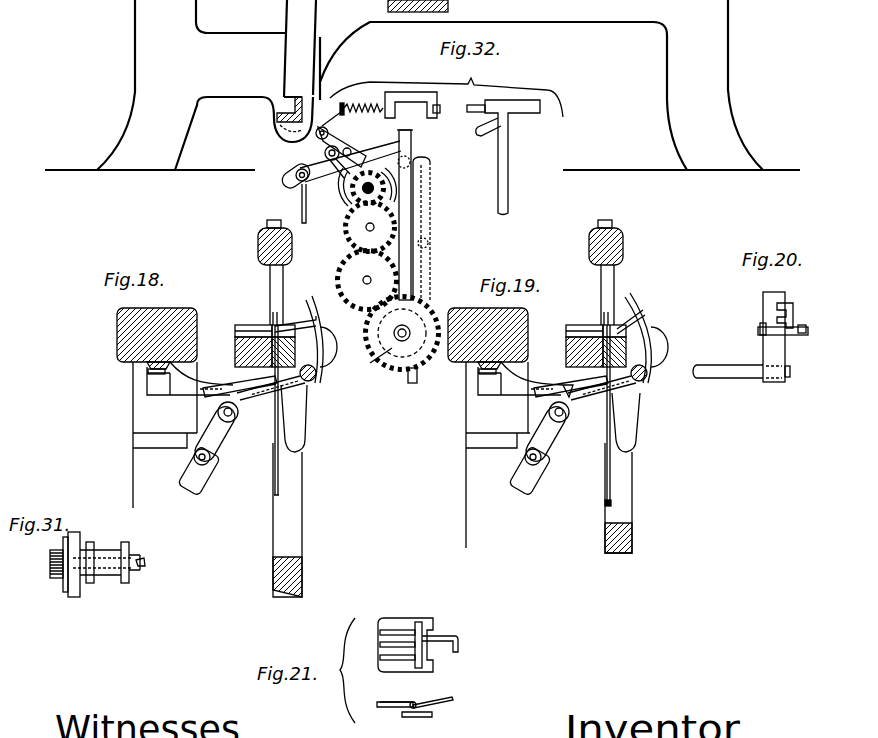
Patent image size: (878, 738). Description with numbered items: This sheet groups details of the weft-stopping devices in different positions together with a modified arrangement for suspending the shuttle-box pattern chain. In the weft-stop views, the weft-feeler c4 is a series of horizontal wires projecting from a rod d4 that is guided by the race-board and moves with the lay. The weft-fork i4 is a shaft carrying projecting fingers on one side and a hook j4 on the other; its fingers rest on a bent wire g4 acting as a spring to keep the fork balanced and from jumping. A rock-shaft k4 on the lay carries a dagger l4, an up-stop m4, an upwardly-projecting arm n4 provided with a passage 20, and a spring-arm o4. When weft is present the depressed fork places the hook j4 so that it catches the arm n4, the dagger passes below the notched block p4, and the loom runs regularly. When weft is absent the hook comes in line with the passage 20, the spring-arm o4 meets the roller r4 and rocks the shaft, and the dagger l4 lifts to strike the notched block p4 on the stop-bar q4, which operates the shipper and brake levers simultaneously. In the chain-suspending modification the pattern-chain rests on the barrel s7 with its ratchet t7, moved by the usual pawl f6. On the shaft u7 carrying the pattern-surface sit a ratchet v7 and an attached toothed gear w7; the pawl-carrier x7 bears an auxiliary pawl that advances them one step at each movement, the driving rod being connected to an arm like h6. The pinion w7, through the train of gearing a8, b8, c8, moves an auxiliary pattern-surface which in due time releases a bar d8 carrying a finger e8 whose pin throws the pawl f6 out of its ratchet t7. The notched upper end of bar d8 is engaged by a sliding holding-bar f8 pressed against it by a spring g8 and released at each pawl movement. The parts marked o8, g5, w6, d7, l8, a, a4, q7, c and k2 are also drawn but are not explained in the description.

In FIG. 32, the spring g8 is at (361, 102).
In FIG. 32, the sliding holding-bar f8 is at (454, 105).
In FIG. 32, the pawl f6 is at (337, 121).
In FIG. 32, the finger e8 is at (349, 145).
In FIG. 32, the bar d8 is at (413, 215).
In FIG. 32, the arm h6 is at (426, 228).
In FIG. 32, the lever o8 is at (350, 161).
In FIG. 32, the pawl-carrier x7 is at (296, 171).
In FIG. 32, the rod g5 is at (302, 191).
In FIG. 32, the toothed gear w7 is at (352, 203).
In FIG. 31, the toothed gear w7 is at (52, 555).
In FIG. 32, the ratchet t7 is at (345, 177).
In FIG. 31, the ratchet t7 is at (75, 598).
In FIG. 32, the ratchet v7 is at (349, 190).
In FIG. 31, the ratchet v7 is at (65, 594).
In FIG. 32, the gear of the train a8 is at (370, 227).
In FIG. 32, the gear of the train b8 is at (367, 280).
In FIG. 32, the gear of the train c8 is at (393, 333).
In FIG. 32, the disk w6 is at (373, 363).
In FIG. 32, the stop d7 is at (408, 378).
In FIG. 32, the T-rod l8 is at (503, 157).
In FIG. 18, the frame a is at (181, 435).
In FIG. 19, the frame a is at (513, 455).
In FIG. 18, the block a4 is at (157, 333).
In FIG. 19, the block a4 is at (488, 333).
In FIG. 18, the stop-bar q4 is at (150, 364).
In FIG. 19, the wedge q7 is at (467, 372).
In FIG. 18, the weft-fork i4 is at (266, 325).
In FIG. 19, the weft-fork i4 is at (599, 272).
In FIG. 21, the weft-fork i4 is at (380, 645).
In FIG. 18, the weft-feeler c4 is at (235, 331).
In FIG. 19, the weft-feeler c4 is at (574, 330).
In FIG. 18, the bent wire g4 is at (236, 340).
In FIG. 19, the bent wire g4 is at (583, 346).
In FIG. 21, the bent wire g4 is at (392, 619).
In FIG. 18, the hook j4 is at (300, 324).
In FIG. 19, the hook j4 is at (631, 315).
In FIG. 20, the hook j4 is at (795, 313).
In FIG. 21, the hook j4 is at (458, 640).
In FIG. 18, the upwardly-projecting arm n4 is at (319, 337).
In FIG. 19, the upwardly-projecting arm n4 is at (638, 331).
In FIG. 20, the upwardly-projecting arm n4 is at (765, 297).
In FIG. 18, the rock-shaft k4 is at (317, 373).
In FIG. 19, the rock-shaft k4 is at (620, 380).
In FIG. 18, the dagger l4 is at (240, 382).
In FIG. 19, the dagger l4 is at (571, 383).
In FIG. 18, the up-stop m4 is at (259, 380).
In FIG. 19, the up-stop m4 is at (592, 380).
In FIG. 18, the notched block p4 is at (201, 378).
In FIG. 19, the notched block p4 is at (537, 379).
In FIG. 18, the roller r4 is at (238, 418).
In FIG. 19, the roller r4 is at (547, 449).
In FIG. 18, the spring-arm o4 is at (250, 401).
In FIG. 19, the spring-arm o4 is at (610, 422).
In FIG. 18, the rod d4 is at (274, 479).
In FIG. 19, the rod d4 is at (598, 415).
In FIG. 18, the bar c is at (287, 520).
In FIG. 19, the bar c is at (618, 498).
In FIG. 20, the passage 20 is at (780, 319).
In FIG. 20, the shaft k2 is at (741, 364).
In FIG. 31, the barrel s7 is at (106, 562).
In FIG. 31, the shaft u7 is at (143, 556).